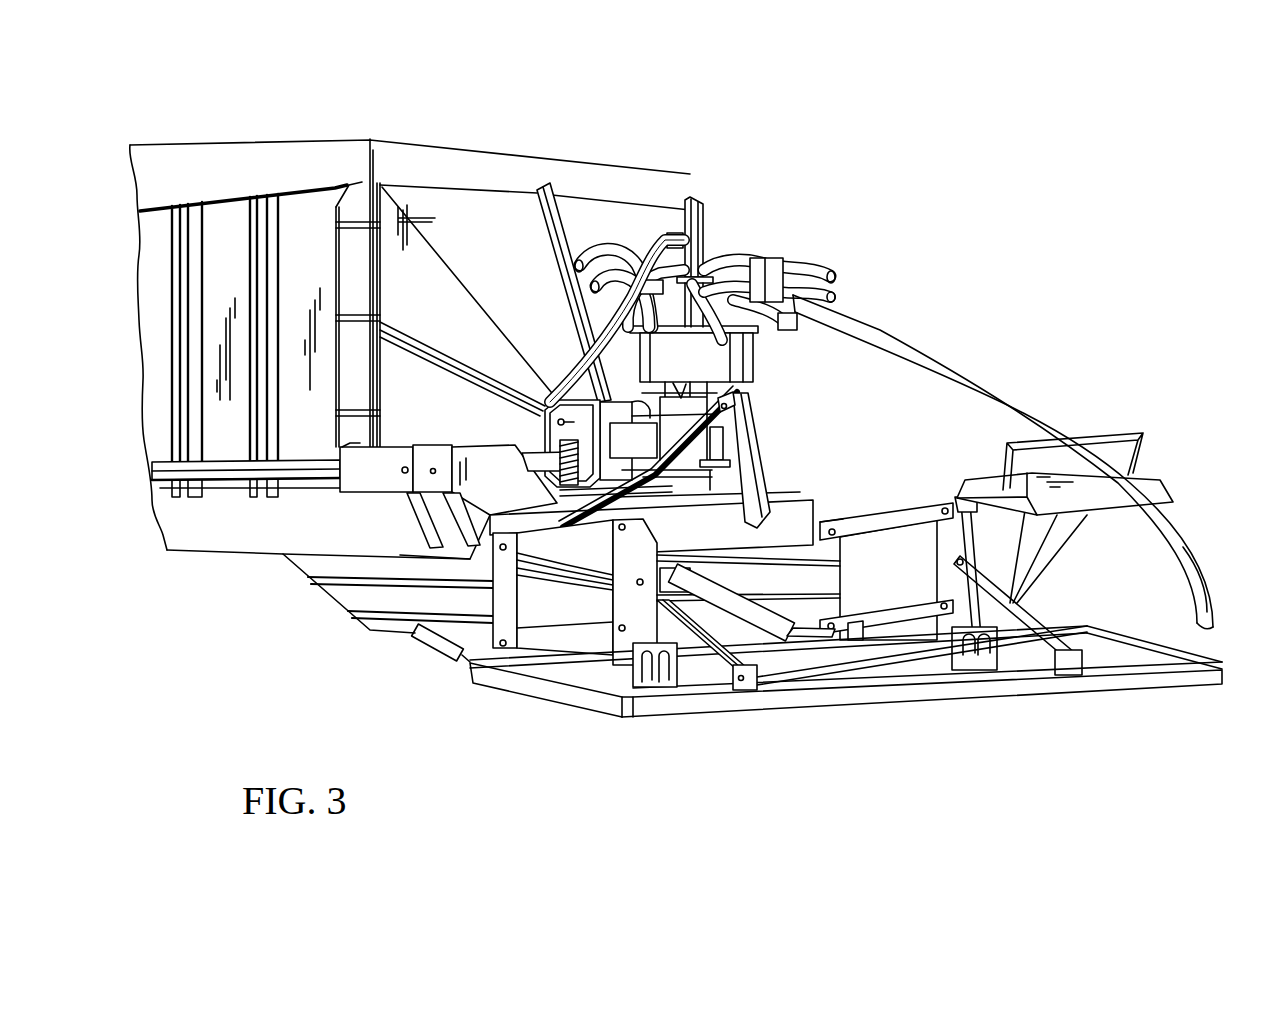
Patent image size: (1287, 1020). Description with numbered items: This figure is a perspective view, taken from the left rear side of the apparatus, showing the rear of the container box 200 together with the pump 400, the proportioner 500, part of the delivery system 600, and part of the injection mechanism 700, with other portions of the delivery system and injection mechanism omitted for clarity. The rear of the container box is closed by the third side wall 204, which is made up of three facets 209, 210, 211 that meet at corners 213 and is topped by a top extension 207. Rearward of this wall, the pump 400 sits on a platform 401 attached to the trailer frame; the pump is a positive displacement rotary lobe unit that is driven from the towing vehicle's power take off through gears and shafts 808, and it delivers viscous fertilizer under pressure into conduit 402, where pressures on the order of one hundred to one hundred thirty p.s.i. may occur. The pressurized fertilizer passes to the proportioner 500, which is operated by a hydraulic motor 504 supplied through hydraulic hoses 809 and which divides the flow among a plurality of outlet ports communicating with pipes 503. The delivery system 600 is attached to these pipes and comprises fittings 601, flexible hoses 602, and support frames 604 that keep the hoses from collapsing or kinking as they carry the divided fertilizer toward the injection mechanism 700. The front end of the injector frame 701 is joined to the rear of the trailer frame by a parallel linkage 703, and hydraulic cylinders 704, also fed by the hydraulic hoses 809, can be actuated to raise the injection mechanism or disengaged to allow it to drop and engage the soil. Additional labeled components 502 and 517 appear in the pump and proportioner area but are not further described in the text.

The container box 200 is at (400, 96).
The third side wall 204 is at (458, 205).
The top extension 207 is at (529, 181).
The facet 209 is at (524, 277).
The facet 210 is at (735, 403).
The facet 211 is at (447, 314).
The corners 213 is at (436, 234).
The pump 400 is at (733, 420).
The platform 401 is at (648, 503).
The conduit 402 is at (658, 454).
The proportioner 500 is at (704, 366).
The support base 502 is at (655, 478).
The pipes 503 is at (731, 268).
The hydraulic motor 504 is at (694, 222).
The post 517 is at (745, 465).
The delivery system 600 is at (835, 112).
The fittings 601 is at (769, 249).
The flexible hoses 602 is at (856, 322).
The support frames 604 is at (990, 480).
The injection mechanism 700 is at (931, 732).
The injector frame 701 is at (530, 690).
The parallel linkage 703 is at (907, 512).
The hydraulic cylinders 704 is at (738, 607).
The gears and shafts 808 is at (305, 468).
The hydraulic hoses 809 is at (563, 390).